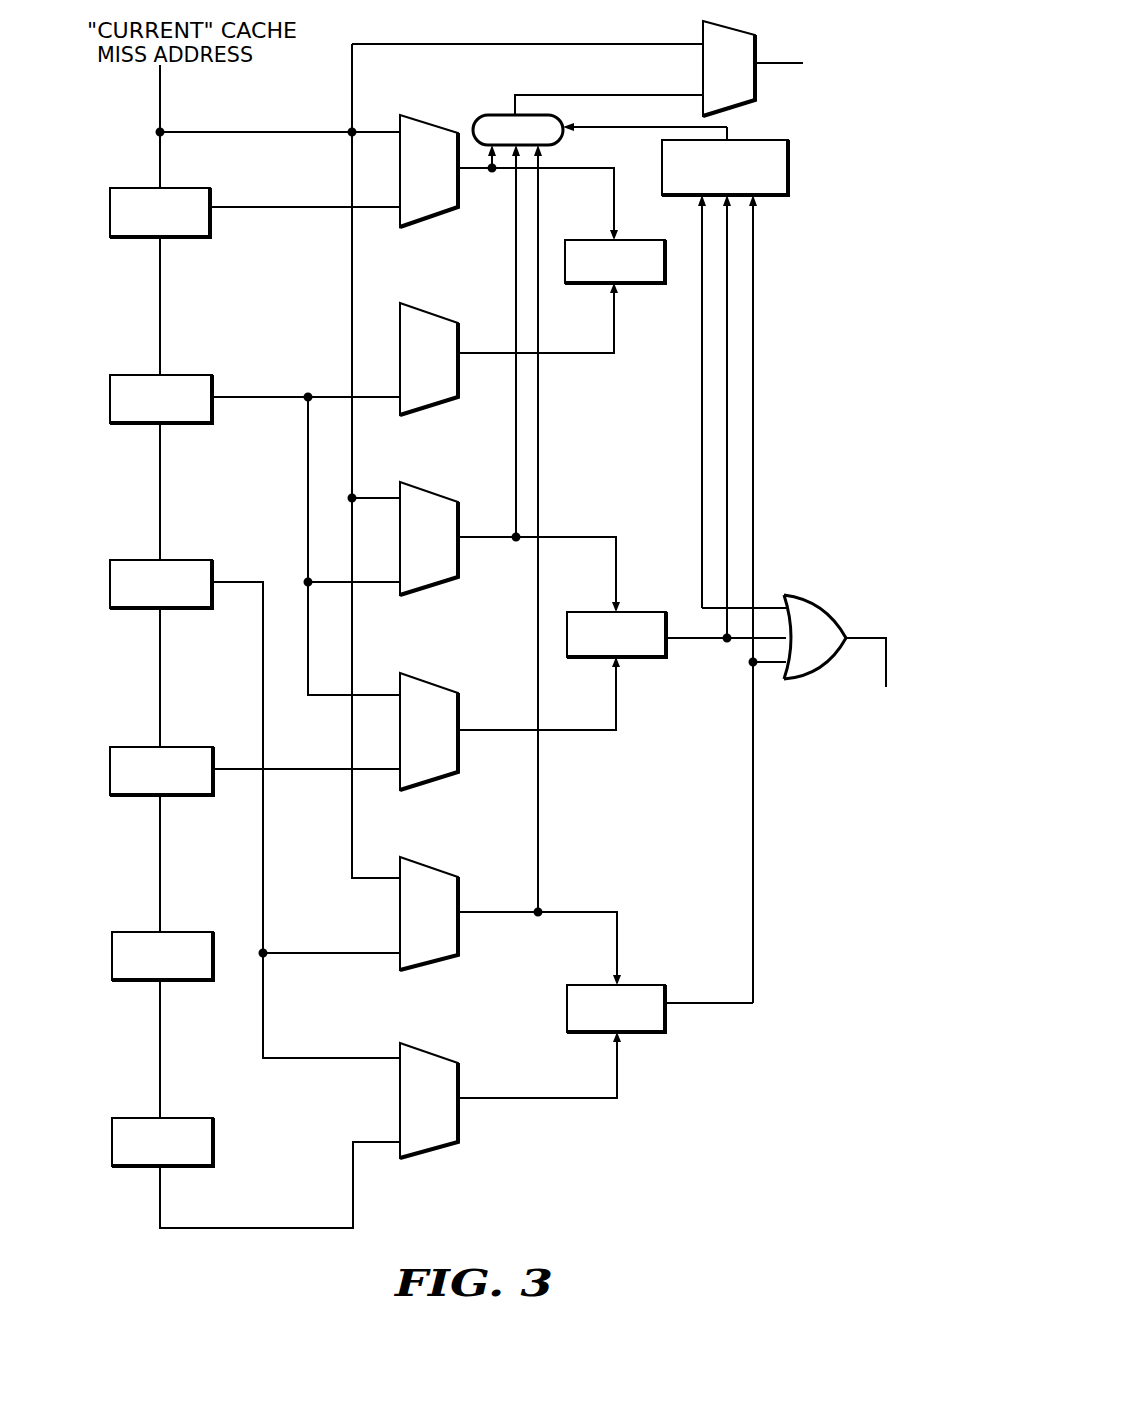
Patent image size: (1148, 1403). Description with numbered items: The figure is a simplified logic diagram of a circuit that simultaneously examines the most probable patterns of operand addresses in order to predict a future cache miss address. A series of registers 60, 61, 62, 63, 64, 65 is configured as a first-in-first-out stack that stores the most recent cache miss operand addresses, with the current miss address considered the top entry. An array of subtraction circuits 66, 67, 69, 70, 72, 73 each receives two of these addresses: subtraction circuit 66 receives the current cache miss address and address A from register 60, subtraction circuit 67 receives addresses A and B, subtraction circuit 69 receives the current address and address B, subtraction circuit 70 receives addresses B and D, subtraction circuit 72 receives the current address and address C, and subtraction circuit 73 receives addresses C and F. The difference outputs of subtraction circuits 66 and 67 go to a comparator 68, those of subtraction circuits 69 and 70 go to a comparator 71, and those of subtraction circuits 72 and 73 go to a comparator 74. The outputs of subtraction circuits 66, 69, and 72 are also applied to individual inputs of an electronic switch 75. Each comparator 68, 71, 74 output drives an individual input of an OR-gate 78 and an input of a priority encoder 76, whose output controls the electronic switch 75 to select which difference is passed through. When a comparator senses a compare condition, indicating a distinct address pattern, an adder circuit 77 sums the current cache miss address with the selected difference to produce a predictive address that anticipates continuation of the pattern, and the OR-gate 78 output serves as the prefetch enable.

The register 60 is at (186, 188).
The register 61 is at (186, 375).
The register 62 is at (186, 560).
The register 63 is at (186, 747).
The register 64 is at (186, 932).
The register 65 is at (188, 1118).
The subtraction circuit 66 is at (421, 118).
The subtraction circuit 67 is at (441, 312).
The comparator 68 is at (640, 240).
The subtraction circuit 69 is at (433, 492).
The subtraction circuit 70 is at (432, 683).
The comparator 71 is at (640, 612).
The subtraction circuit 72 is at (432, 867).
The subtraction circuit 73 is at (440, 1052).
The comparator 74 is at (650, 985).
The electronic switch 75 is at (497, 115).
The priority encoder 76 is at (785, 140).
The adder circuit 77 is at (760, 48).
The OR-gate 78 is at (808, 600).